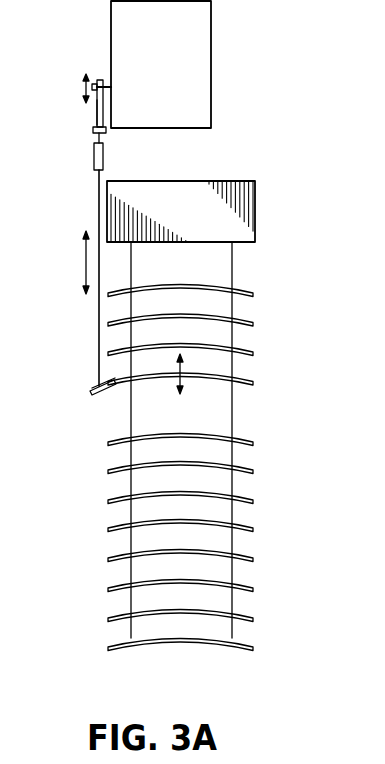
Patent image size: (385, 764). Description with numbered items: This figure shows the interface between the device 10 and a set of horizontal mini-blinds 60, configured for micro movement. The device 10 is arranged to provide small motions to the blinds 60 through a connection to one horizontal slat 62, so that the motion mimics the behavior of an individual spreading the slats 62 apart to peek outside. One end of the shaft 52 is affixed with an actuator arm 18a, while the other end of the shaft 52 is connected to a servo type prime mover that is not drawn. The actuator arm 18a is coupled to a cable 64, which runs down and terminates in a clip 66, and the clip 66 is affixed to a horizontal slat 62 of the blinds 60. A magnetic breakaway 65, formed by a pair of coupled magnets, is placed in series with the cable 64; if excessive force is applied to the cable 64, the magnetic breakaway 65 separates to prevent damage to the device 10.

The device 10 is at (215, 53).
The shaft 52 is at (96, 80).
The actuator arm 18a is at (97, 115).
The magnetic breakaway 65 is at (94, 160).
The cable 64 is at (98, 202).
The blinds 60 is at (293, 227).
The horizontal slat 62 is at (253, 296).
The clip 66 is at (87, 387).